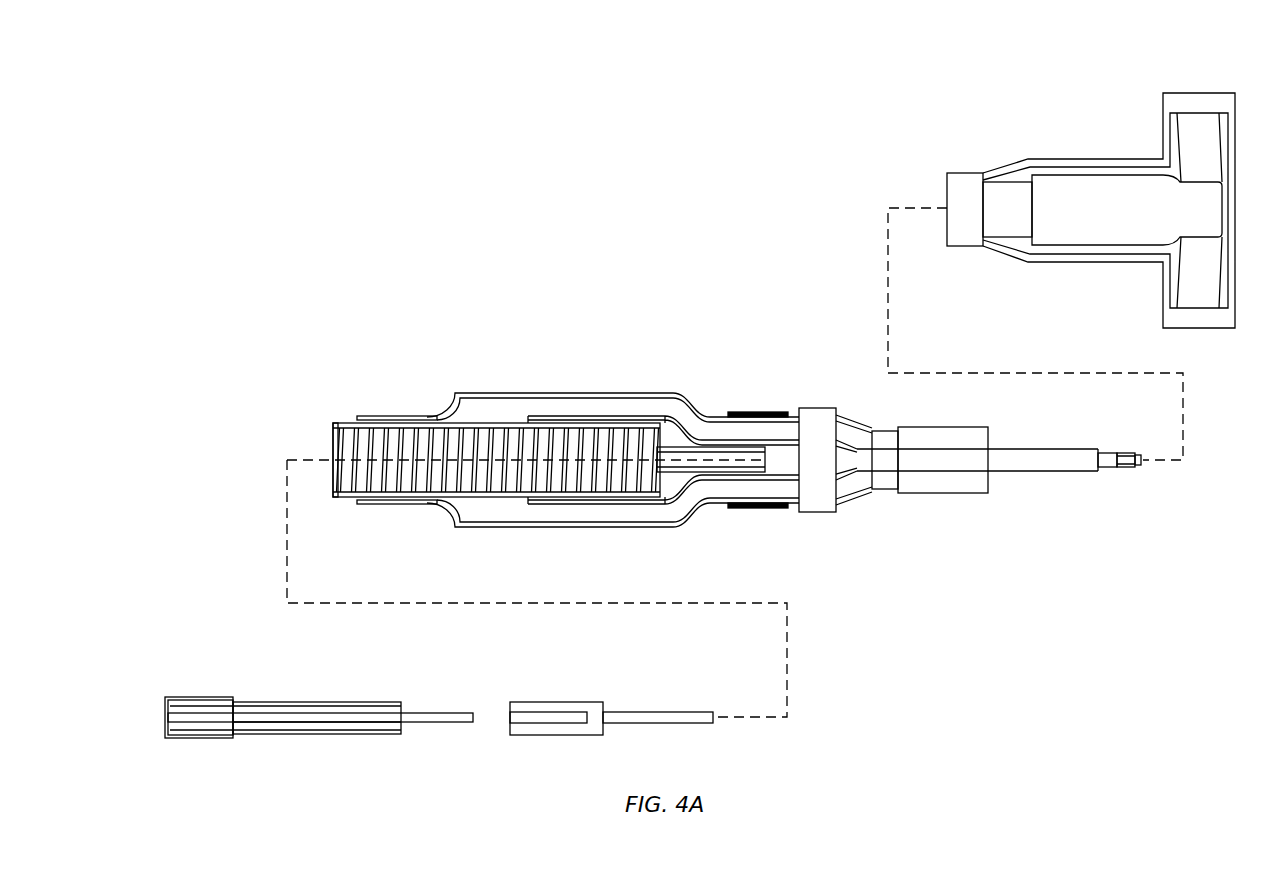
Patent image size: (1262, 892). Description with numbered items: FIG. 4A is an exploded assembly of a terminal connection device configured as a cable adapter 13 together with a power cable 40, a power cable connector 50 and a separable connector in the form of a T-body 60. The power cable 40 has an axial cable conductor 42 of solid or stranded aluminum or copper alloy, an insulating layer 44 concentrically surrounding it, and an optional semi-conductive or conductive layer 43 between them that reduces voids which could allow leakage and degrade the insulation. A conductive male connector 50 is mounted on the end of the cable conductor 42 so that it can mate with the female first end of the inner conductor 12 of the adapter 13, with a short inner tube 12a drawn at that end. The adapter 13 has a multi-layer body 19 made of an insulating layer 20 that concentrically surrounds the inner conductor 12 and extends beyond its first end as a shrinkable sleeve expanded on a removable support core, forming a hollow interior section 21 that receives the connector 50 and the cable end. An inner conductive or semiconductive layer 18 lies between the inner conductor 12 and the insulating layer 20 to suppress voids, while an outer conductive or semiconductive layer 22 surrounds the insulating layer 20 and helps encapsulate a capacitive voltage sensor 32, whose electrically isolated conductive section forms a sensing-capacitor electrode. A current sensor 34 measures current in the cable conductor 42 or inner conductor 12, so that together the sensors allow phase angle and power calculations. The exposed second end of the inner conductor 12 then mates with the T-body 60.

The adapter 13 is at (385, 362).
The inner conductor 12 is at (1044, 470).
The inner tube 12a is at (778, 465).
The inner conductive or semiconductive layer 18 is at (601, 498).
The multi-layer body 19 is at (606, 390).
The insulating layer 20 is at (503, 412).
The hollow interior section 21 is at (330, 437).
The outer conductive or semiconductive layer 22 is at (470, 392).
The capacitive voltage sensor 32 is at (755, 411).
The current sensor 34 is at (830, 468).
The power cable 40 is at (237, 672).
The cable conductor 42 is at (445, 713).
The semi-conductive or conductive layer 43 is at (383, 723).
The insulating layer 44 is at (357, 704).
The conductive male connector 50 is at (568, 684).
The T-body 60 is at (1010, 133).